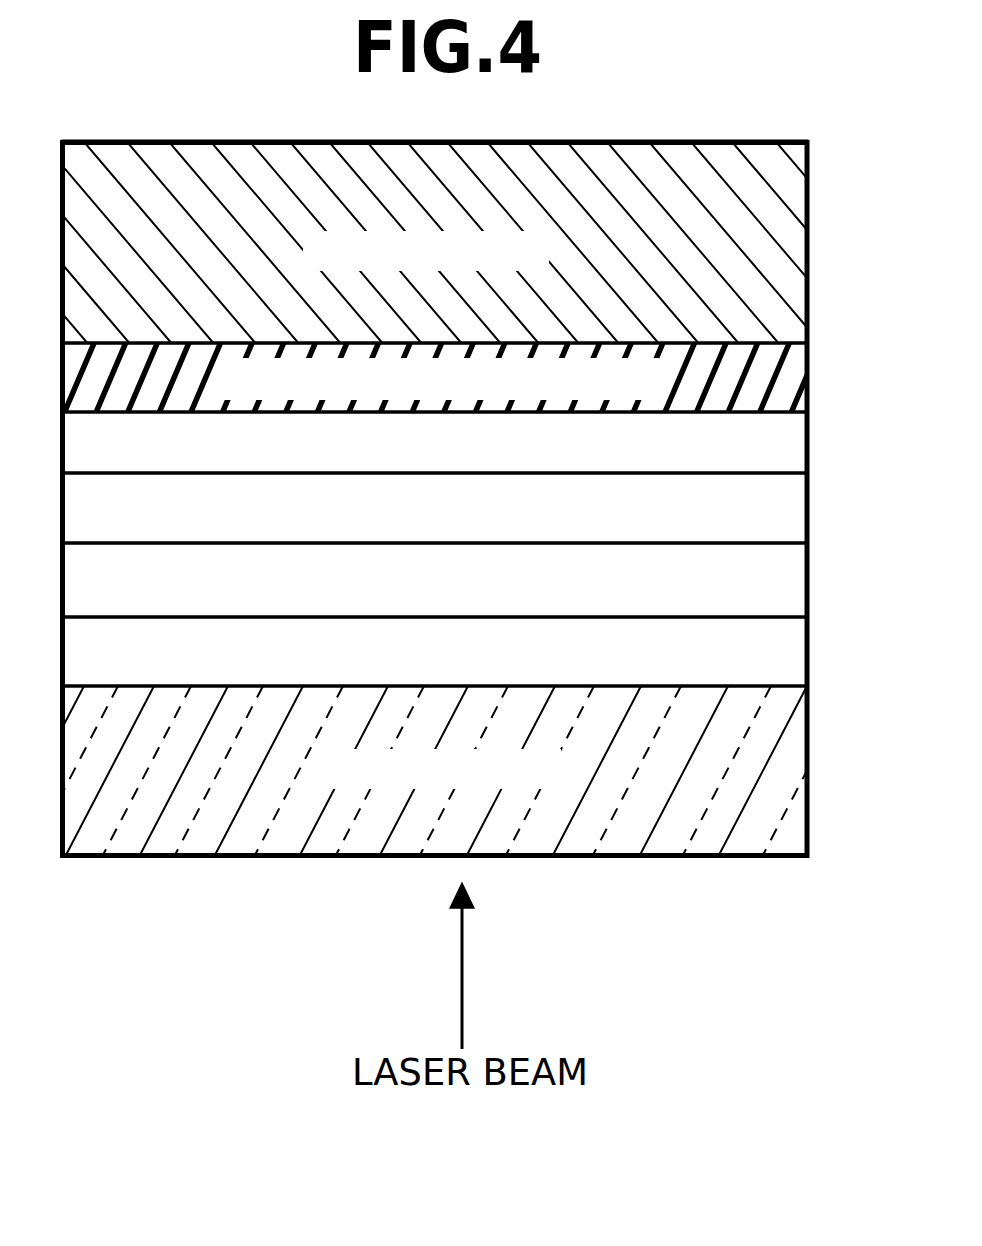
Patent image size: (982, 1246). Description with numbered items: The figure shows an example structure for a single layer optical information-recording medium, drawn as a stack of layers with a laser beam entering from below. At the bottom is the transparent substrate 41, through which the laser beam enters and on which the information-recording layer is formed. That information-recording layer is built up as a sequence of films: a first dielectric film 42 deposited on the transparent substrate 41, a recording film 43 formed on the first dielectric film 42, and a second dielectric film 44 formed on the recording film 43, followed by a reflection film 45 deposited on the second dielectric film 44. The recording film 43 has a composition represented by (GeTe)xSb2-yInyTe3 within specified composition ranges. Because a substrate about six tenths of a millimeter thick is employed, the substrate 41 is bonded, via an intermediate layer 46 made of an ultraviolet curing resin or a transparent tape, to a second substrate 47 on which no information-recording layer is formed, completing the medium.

The transparent substrate 41 is at (793, 765).
The first dielectric film 42 is at (795, 655).
The recording film 43 is at (795, 589).
The second dielectric film 44 is at (795, 512).
The reflection film 45 is at (795, 447).
The intermediate layer 46 is at (797, 369).
The substrate 47 is at (797, 251).